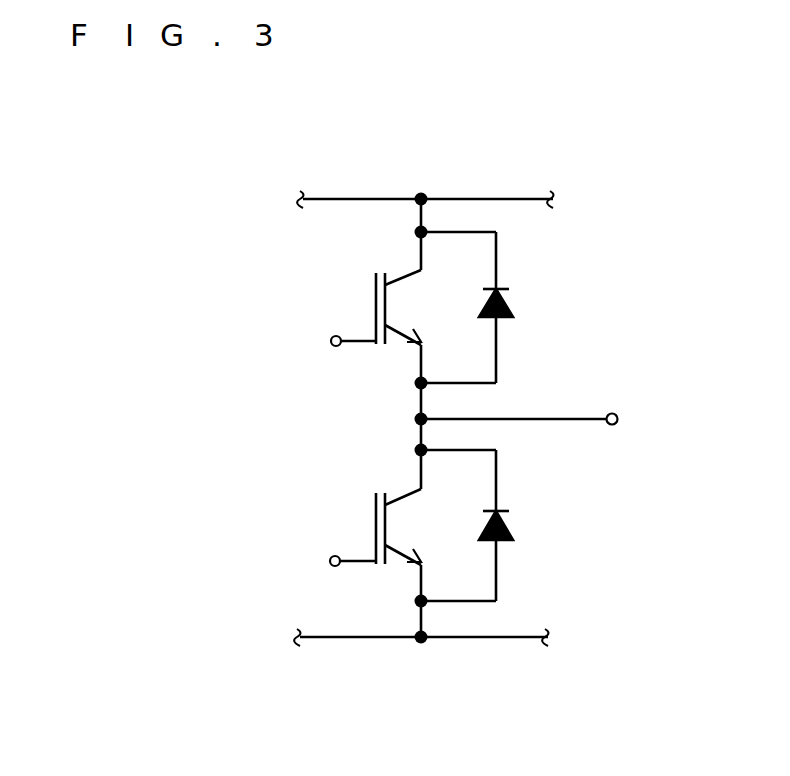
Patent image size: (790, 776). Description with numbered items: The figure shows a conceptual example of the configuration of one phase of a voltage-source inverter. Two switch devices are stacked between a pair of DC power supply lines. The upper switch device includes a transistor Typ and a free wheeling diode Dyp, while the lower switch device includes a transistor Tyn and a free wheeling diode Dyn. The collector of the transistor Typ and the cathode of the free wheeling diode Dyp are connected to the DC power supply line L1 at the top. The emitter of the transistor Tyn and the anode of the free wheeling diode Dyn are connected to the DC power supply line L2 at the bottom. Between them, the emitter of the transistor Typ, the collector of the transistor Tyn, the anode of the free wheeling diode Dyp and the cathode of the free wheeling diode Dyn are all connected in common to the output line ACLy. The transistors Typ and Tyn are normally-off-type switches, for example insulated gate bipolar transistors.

The DC power supply line L1 is at (514, 198).
The DC power supply line L2 is at (527, 635).
The output line ACLy is at (590, 418).
The transistor Typ is at (360, 298).
The transistor Tyn is at (360, 520).
The free wheeling diode Dyp is at (509, 305).
The free wheeling diode Dyn is at (510, 525).